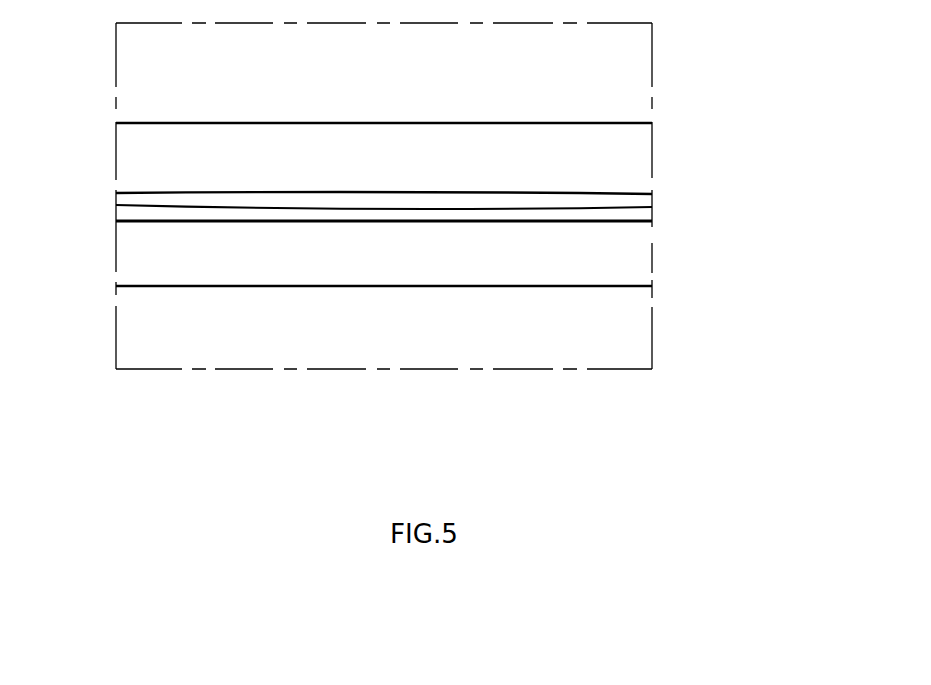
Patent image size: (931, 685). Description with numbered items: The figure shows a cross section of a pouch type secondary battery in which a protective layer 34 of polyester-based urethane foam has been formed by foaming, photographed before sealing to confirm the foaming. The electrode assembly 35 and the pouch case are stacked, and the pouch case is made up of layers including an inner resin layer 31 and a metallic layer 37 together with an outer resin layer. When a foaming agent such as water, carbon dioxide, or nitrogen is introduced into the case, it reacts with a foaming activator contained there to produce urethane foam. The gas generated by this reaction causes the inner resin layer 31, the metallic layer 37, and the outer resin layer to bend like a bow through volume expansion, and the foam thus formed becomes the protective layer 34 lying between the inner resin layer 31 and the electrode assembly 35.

The inner resin layer 31 is at (638, 151).
The protective layer 34 is at (126, 200).
The electrode assembly 35 is at (125, 215).
The metallic layer 37 is at (384, 207).